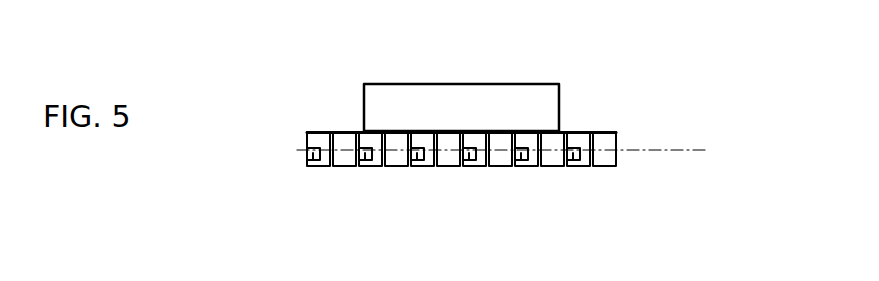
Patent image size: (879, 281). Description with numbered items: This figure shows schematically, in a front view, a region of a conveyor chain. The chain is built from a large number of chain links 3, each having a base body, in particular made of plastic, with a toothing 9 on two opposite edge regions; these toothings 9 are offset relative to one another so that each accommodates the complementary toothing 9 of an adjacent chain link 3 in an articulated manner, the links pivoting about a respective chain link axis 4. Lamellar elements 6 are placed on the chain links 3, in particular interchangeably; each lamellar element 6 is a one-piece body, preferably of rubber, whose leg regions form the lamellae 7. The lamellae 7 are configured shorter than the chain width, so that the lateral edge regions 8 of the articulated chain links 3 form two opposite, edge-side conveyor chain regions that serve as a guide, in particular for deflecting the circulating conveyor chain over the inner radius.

The chain link 3 is at (468, 179).
The chain link axis 4 is at (665, 147).
The lamellar element 6 is at (471, 75).
The lamellae 7 is at (473, 97).
The lateral edge regions 8 is at (303, 107).
The toothing 9 is at (348, 152).